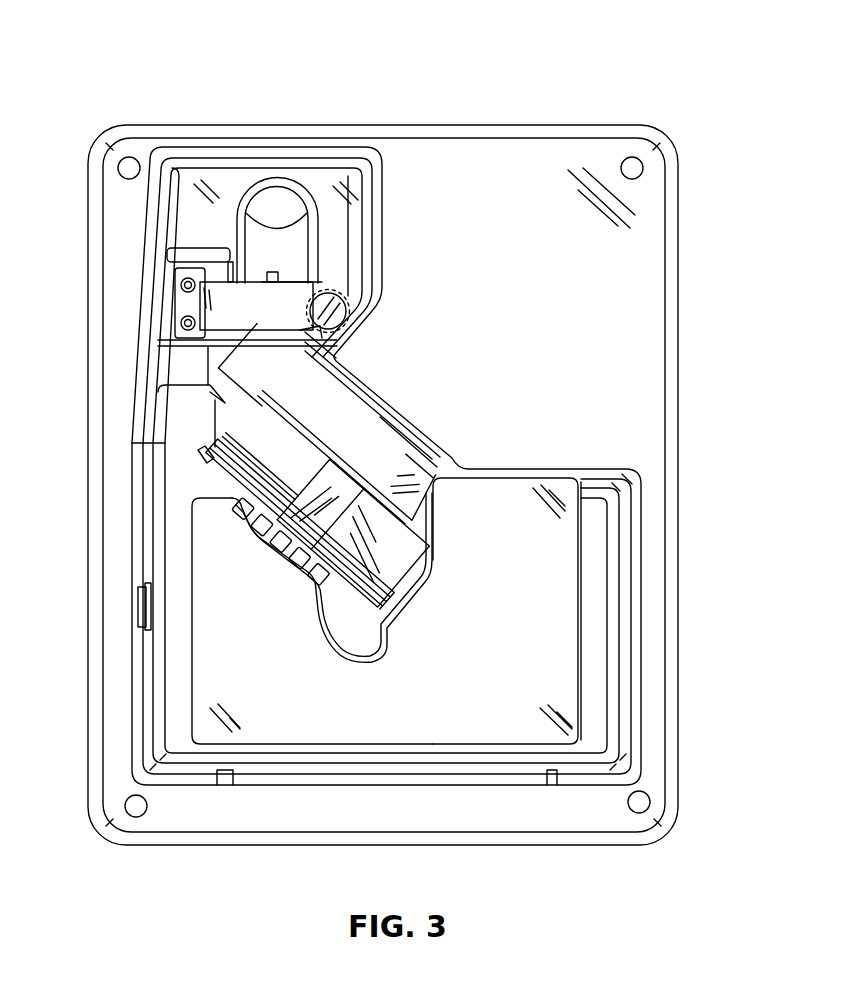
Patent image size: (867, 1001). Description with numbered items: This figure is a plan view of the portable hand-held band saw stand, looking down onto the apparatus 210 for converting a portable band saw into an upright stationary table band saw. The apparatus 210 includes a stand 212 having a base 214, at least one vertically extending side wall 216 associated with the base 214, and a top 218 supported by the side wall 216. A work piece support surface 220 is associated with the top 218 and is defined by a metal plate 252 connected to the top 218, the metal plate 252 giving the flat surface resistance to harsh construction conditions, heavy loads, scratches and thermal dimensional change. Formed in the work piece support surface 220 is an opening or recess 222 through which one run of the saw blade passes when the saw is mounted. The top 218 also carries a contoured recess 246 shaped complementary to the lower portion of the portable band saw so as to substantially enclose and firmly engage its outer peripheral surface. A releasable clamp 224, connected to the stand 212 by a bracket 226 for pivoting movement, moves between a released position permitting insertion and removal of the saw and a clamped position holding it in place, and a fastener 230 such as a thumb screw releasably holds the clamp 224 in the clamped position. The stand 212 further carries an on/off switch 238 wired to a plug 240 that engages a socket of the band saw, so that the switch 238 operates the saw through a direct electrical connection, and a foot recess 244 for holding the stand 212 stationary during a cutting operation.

The apparatus 210 is at (219, 37).
The stand 212 is at (585, 108).
The base 214 is at (640, 287).
The side wall 216 is at (625, 598).
The top 218 is at (597, 530).
The work piece support surface 220 is at (560, 648).
The opening or recess 222 is at (357, 660).
The releasable clamp 224 is at (350, 370).
The bracket 226 is at (180, 306).
The fastener 230 is at (334, 323).
The on/off switch 238 is at (140, 605).
The plug 240 is at (273, 271).
The foot recess 244 is at (539, 768).
The contoured recess 246 is at (352, 445).
The metal plate 252 is at (190, 695).